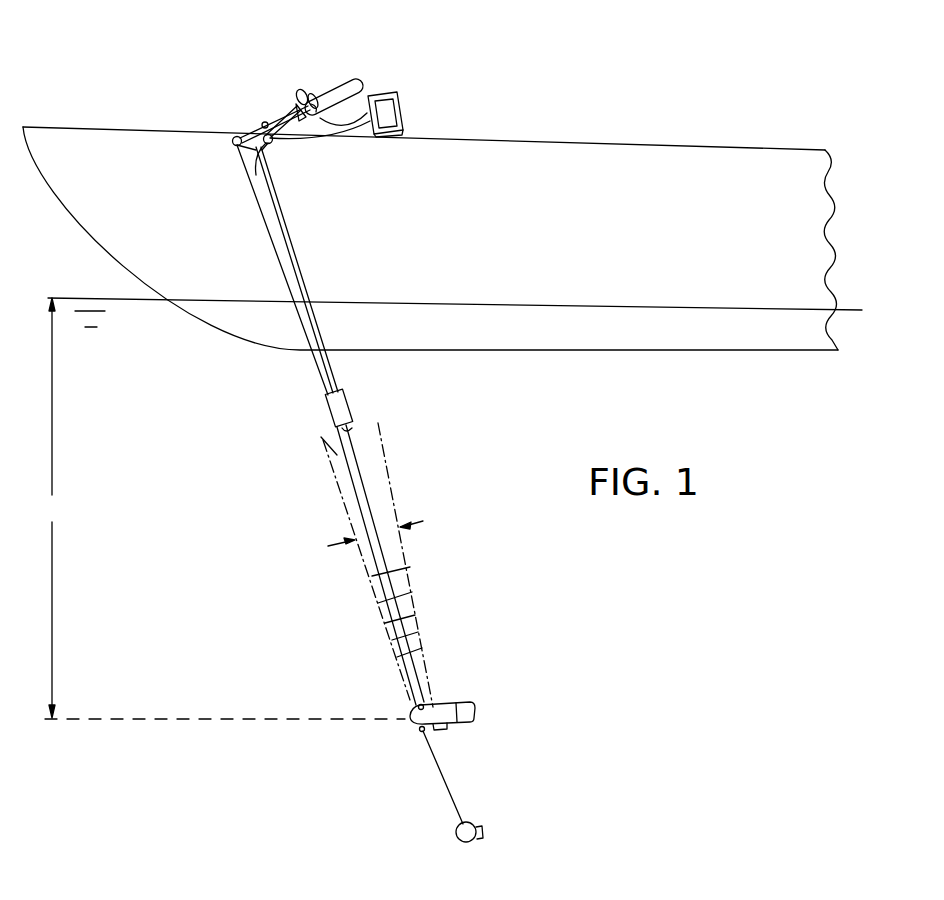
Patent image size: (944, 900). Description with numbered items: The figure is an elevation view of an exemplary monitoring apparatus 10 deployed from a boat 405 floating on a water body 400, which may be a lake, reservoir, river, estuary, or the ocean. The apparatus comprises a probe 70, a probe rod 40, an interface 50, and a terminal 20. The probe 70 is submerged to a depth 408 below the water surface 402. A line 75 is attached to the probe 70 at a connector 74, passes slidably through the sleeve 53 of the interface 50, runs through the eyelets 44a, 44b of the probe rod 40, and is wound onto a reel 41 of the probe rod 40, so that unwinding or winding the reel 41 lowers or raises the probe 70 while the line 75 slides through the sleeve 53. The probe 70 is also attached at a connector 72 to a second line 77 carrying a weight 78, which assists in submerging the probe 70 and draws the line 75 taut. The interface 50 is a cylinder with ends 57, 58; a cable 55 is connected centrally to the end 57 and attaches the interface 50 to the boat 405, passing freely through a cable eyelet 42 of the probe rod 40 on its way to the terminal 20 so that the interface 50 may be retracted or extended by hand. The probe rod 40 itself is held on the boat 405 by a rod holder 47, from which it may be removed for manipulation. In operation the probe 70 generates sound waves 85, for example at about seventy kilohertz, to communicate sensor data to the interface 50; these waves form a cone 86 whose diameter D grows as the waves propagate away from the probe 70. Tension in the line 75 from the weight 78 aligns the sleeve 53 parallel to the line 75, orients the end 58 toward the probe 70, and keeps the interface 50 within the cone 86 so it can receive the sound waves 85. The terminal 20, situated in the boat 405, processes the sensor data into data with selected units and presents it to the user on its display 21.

The monitoring apparatus 10 is at (800, 58).
The terminal 20 is at (395, 107).
The display 21 is at (397, 95).
The probe rod 40 is at (346, 83).
The reel 41 is at (307, 87).
The cable eyelet 42 is at (265, 148).
The eyelet 44a is at (237, 136).
The eyelet 44b is at (265, 130).
The rod holder 47 is at (337, 117).
The interface 50 is at (341, 394).
The sleeve 53 is at (325, 411).
The cable 55 is at (310, 282).
The end 57 is at (338, 392).
The end 58 is at (348, 428).
The probe 70 is at (470, 722).
The connector 72 is at (419, 732).
The connector 74 is at (418, 705).
The line 75 is at (328, 452).
The line 77 is at (450, 780).
The weight 78 is at (457, 833).
The sound waves 85 is at (408, 597).
The cone 86 is at (390, 470).
The water body 400 is at (157, 380).
The water surface 402 is at (88, 298).
The boat 405 is at (618, 155).
The depth 408 is at (218, 508).
The diameter D is at (423, 521).